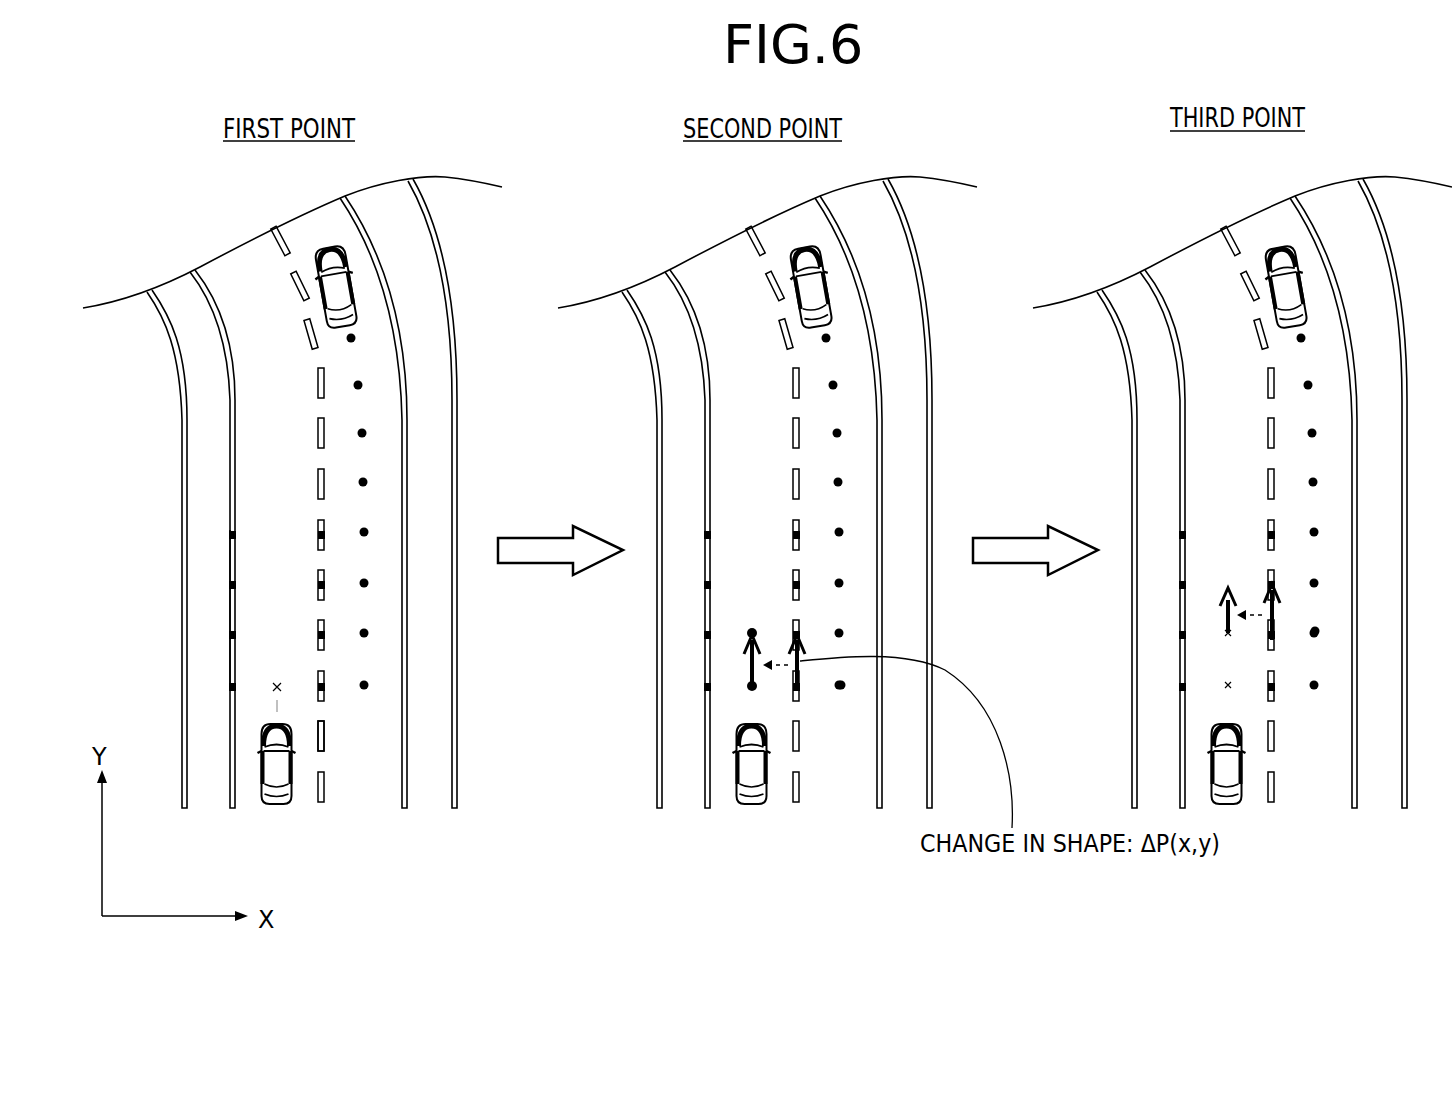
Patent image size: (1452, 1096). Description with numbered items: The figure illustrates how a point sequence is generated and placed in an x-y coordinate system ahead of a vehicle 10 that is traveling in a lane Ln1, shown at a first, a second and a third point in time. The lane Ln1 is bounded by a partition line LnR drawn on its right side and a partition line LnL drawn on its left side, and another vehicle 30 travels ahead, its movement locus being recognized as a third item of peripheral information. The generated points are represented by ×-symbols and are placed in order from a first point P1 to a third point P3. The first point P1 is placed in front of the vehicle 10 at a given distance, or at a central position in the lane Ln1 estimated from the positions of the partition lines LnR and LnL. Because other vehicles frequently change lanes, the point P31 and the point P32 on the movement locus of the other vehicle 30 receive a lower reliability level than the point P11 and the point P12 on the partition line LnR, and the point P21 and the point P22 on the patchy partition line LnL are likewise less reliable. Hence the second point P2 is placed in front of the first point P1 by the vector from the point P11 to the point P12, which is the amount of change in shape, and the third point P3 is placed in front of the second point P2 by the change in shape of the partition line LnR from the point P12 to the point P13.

The other vehicle 30 is at (357, 293).
The vehicle 10 is at (294, 765).
The partition line LnL is at (237, 822).
The lane Ln1 is at (282, 822).
The partition line LnR is at (327, 822).
The first point P1 is at (277, 687).
The second point P2 is at (752, 628).
The third point P3 is at (1231, 579).
The point P11 is at (780, 848).
The point P12 is at (798, 630).
The point P13 is at (1274, 582).
The point P21 is at (707, 687).
The point P22 is at (1184, 636).
The point P31 is at (846, 686).
The point P32 is at (1320, 632).